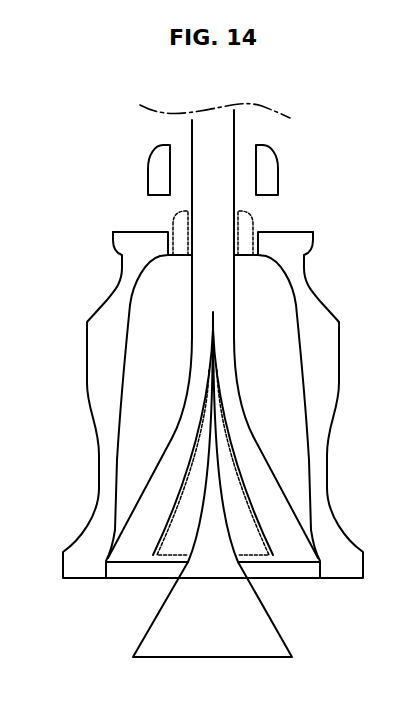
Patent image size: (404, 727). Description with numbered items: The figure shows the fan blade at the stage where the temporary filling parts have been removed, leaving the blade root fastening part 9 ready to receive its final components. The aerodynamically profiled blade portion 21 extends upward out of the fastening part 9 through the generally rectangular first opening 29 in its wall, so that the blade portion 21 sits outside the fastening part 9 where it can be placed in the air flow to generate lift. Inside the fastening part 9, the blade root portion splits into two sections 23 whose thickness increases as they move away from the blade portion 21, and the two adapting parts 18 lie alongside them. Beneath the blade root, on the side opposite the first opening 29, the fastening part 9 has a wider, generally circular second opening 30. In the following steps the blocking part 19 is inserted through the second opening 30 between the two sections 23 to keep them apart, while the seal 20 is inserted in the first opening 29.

The blade root fastening part 9 is at (344, 350).
The adapting parts 18 is at (157, 308).
The blocking part 19 is at (212, 626).
The seal 20 is at (160, 170).
The aerodynamically profiled blade portion 21 is at (229, 142).
The sections 23 is at (137, 541).
The first opening 29 is at (245, 234).
The second opening 30 is at (158, 575).